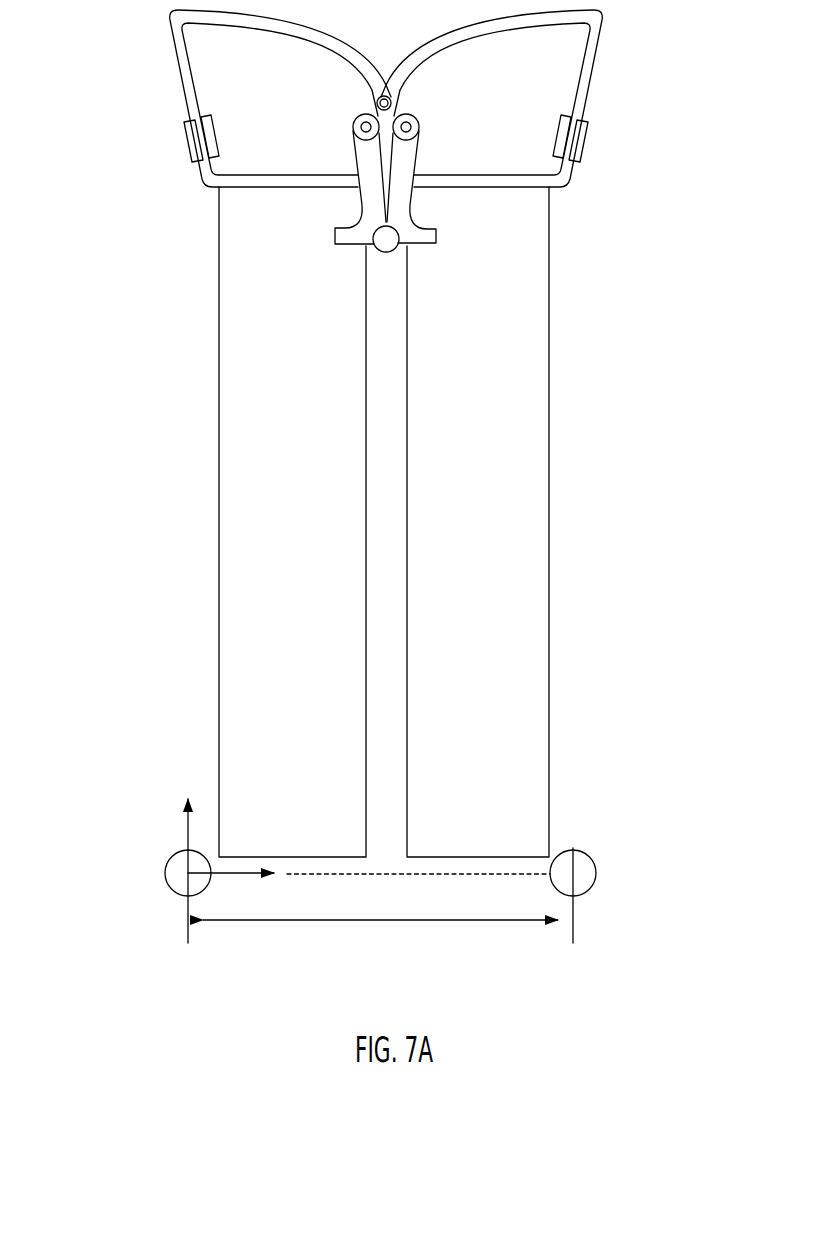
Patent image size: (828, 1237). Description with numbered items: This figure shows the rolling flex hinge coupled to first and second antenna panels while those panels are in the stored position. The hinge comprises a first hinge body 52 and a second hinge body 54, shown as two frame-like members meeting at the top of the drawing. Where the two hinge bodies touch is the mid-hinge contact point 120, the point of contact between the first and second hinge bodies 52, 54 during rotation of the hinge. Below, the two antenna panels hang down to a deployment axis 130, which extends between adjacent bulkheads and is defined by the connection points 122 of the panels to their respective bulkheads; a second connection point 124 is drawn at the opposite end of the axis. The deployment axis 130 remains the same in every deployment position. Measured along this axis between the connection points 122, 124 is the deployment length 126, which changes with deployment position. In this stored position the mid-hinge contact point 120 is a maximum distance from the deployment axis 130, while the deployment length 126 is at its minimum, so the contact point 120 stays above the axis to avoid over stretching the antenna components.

The first hinge body 52 is at (177, 60).
The second hinge body 54 is at (594, 66).
The mid-hinge contact point 120 is at (390, 100).
The connection point 122 is at (165, 864).
The second reference point 124 is at (612, 843).
The deployment length 126 is at (497, 922).
The deployment axis 130 is at (365, 877).